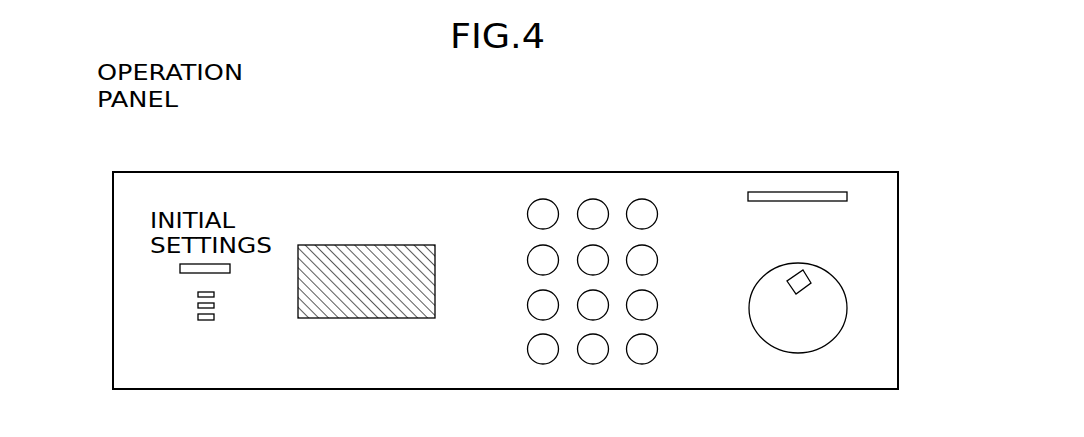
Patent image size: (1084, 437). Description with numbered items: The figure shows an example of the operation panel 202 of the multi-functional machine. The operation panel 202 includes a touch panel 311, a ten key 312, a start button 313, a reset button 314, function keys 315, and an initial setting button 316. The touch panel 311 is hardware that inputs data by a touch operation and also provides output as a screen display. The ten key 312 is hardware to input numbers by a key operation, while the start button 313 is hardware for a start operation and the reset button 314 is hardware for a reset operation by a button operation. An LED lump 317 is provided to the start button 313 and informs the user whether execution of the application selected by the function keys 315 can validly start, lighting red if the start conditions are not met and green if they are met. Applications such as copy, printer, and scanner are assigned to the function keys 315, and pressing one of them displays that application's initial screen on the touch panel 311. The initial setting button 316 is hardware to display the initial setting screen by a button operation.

The operation panel 202 is at (147, 140).
The touch panel 311 is at (367, 245).
The ten key 312 is at (597, 199).
The start button 313 is at (847, 312).
The reset button 314 is at (847, 199).
The function keys 315 is at (198, 305).
The initial setting button 316 is at (180, 268).
The LED lump 317 is at (809, 277).